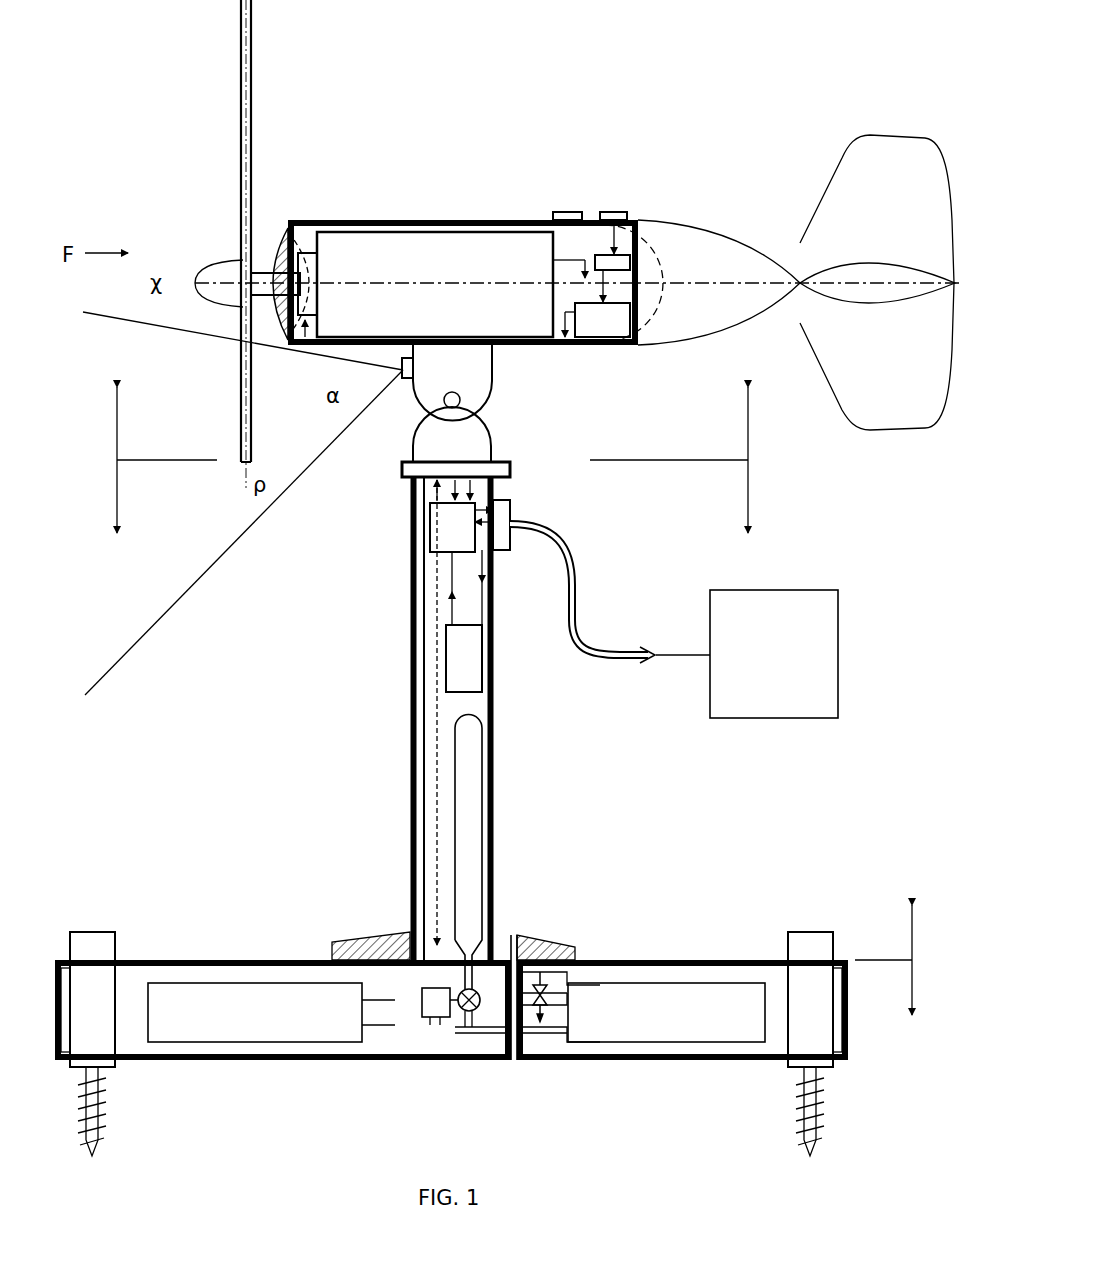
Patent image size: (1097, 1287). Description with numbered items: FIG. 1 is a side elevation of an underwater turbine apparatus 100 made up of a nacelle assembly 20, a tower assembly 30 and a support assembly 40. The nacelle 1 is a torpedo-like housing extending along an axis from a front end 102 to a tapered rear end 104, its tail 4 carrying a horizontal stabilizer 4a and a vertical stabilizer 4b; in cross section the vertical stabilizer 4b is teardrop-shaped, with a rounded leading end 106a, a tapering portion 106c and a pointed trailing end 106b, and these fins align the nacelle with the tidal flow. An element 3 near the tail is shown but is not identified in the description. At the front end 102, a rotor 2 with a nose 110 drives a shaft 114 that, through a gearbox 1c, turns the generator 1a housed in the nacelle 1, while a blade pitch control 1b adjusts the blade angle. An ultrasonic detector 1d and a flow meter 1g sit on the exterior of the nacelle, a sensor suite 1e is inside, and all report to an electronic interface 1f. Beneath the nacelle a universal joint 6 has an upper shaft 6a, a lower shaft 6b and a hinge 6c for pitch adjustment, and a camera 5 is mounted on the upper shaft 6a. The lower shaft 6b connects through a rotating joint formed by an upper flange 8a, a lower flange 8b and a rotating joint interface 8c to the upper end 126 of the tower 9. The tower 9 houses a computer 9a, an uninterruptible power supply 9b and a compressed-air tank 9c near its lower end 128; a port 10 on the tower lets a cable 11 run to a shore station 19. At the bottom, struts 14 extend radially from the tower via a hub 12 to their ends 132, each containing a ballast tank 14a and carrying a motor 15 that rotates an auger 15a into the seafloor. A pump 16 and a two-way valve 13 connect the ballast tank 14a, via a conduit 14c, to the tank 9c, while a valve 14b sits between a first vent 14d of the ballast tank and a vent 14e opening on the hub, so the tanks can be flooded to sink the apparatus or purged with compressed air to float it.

The nacelle 1 is at (463, 254).
The generator 1a is at (415, 220).
The blade pitch control 1b is at (282, 272).
The gearbox 1c is at (352, 242).
The ultrasonic detector 1d is at (614, 211).
The sensor suite 1e is at (620, 262).
The electronic interface 1f is at (600, 325).
The flow meter 1g is at (568, 211).
The rotor 2 is at (232, 348).
The swivel region 3 is at (655, 295).
The tail 4 is at (710, 245).
The horizontal stabilizer 4a is at (880, 145).
The vertical stabilizer 4b is at (868, 295).
The camera 5 is at (398, 380).
The universal joint 6 is at (487, 403).
The upper shaft 6a is at (470, 353).
The lower shaft 6b is at (465, 456).
The hinge 6c is at (462, 400).
The upper flange 8a is at (510, 468).
The lower flange 8b is at (495, 470).
The rotating joint interface 8c is at (505, 485).
The tower 9 is at (488, 657).
The computer 9a is at (450, 530).
The uninterruptible power supply 9b is at (465, 652).
The tank 9c is at (473, 762).
The port 10 is at (500, 560).
The cable 11 is at (590, 580).
The hub 12 is at (360, 945).
The valve 13 is at (470, 1015).
The struts 14 is at (178, 960).
The ballast tank 14a is at (240, 1042).
The valve 14b is at (545, 975).
The conduit 14c is at (575, 1038).
The first vent 14d is at (568, 998).
The vent 14e is at (512, 933).
The motor 15 is at (92, 945).
The auger 15a is at (110, 1110).
The pump 16 is at (425, 1010).
The shore station 19 is at (774, 654).
The nacelle assembly 20 is at (429, 460).
The tower assembly 30 is at (512, 762).
The support assembly 40 is at (935, 1011).
The underwater turbine apparatus 100 is at (210, 651).
The front end 102 is at (262, 250).
The rear end 104 is at (798, 256).
The leading end 106a is at (808, 290).
The trailing end 106b is at (944, 276).
The tapering portion 106c is at (868, 270).
The nose 110 is at (222, 268).
The shaft 114 is at (275, 300).
The upper end 126 is at (425, 480).
The lower end 128 is at (405, 935).
The end 132 is at (56, 975).